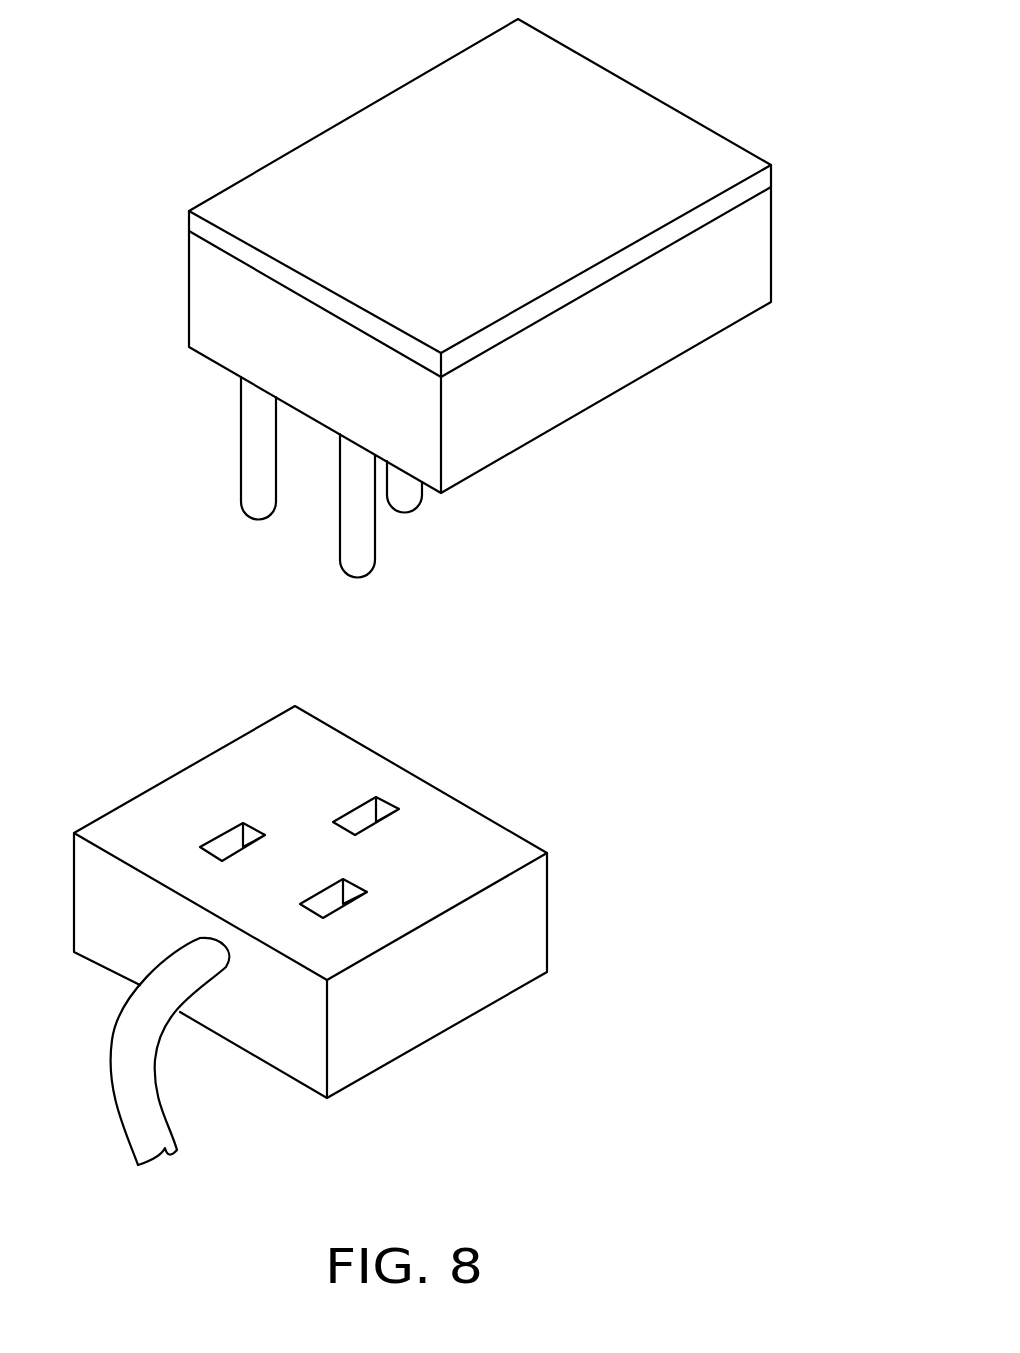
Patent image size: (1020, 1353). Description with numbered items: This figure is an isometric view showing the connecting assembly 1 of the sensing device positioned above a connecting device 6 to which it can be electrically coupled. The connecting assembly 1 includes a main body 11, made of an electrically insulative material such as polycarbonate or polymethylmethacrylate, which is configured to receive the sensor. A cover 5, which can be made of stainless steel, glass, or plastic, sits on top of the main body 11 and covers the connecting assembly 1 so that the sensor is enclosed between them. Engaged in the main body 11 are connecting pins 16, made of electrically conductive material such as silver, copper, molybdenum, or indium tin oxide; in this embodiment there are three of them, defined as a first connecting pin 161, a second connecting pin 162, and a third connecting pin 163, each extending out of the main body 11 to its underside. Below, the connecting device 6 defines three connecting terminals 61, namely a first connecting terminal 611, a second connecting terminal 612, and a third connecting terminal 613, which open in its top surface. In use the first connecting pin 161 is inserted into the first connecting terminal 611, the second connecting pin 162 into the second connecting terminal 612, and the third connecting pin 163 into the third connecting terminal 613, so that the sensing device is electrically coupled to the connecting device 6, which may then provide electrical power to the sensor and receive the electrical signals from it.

The connecting assembly 1 is at (212, 103).
The cover 5 is at (667, 133).
The main body 11 is at (702, 300).
The connecting pins 16 is at (592, 485).
The first connecting pin 161 is at (258, 508).
The second connecting pin 162 is at (407, 498).
The third connecting pin 163 is at (358, 547).
The connecting device 6 is at (486, 1040).
The connecting terminals 61 is at (599, 689).
The first connecting terminal 611 is at (248, 835).
The second connecting terminal 612 is at (385, 808).
The third connecting terminal 613 is at (350, 892).